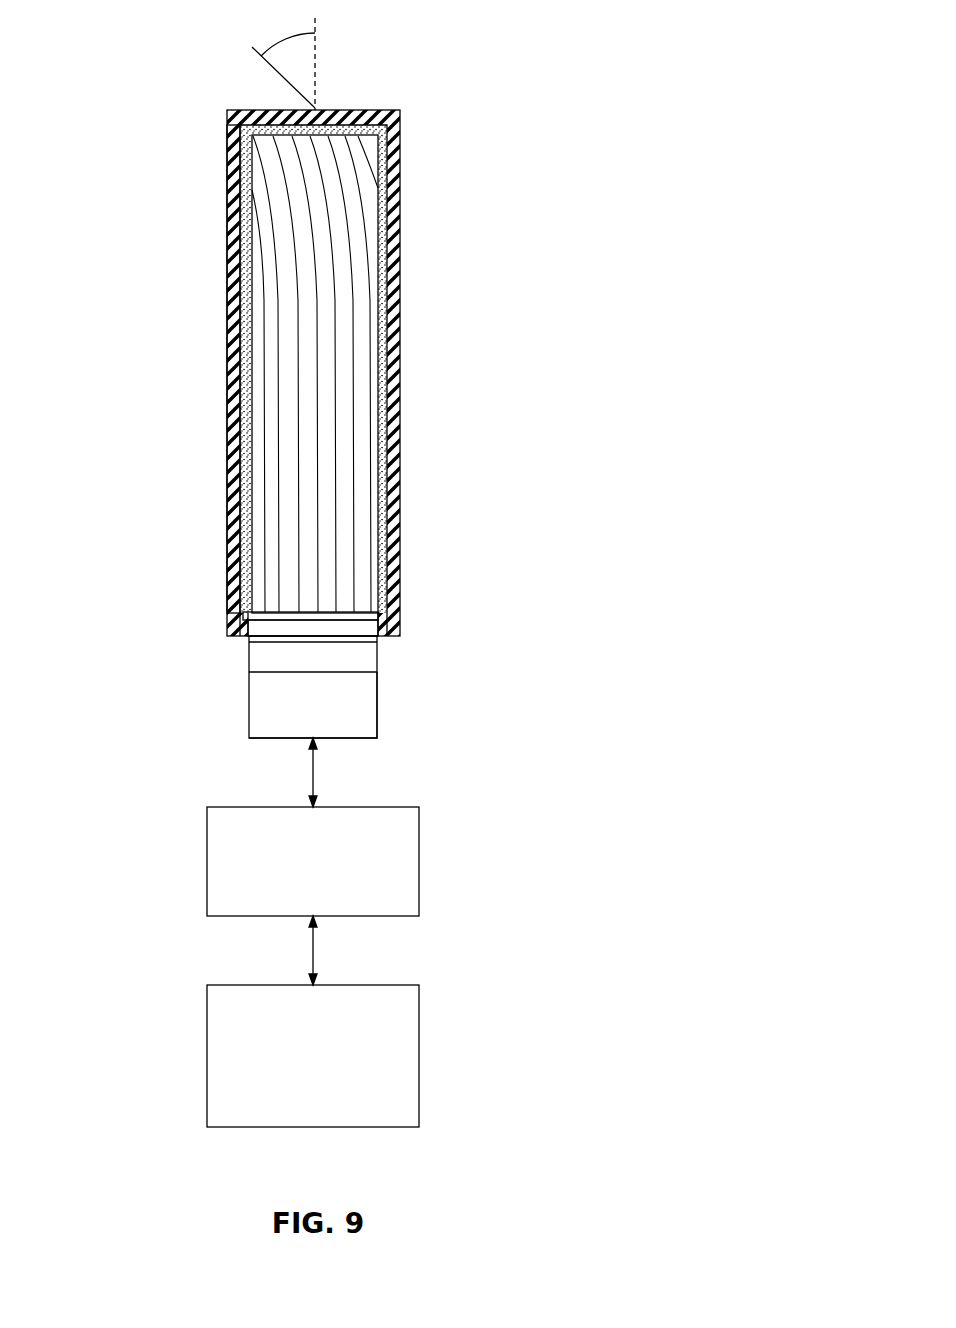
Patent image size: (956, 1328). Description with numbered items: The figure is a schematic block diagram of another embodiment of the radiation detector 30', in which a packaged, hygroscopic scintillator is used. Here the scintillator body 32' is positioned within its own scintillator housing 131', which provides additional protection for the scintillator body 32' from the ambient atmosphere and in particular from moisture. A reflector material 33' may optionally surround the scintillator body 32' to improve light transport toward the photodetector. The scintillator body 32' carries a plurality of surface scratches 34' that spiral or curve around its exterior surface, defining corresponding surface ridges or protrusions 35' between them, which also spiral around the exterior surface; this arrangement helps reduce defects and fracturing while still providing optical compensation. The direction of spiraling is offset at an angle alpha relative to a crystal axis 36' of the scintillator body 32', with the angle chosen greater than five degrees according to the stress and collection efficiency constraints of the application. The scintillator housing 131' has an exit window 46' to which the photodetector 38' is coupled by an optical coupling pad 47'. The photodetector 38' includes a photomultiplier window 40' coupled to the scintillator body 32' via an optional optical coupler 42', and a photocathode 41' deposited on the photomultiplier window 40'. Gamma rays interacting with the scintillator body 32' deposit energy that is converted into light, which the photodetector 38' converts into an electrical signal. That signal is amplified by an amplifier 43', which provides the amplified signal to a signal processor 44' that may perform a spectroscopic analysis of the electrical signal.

The radiation detector 30' is at (361, 380).
The scintillator body 32' is at (297, 373).
The scintillator housing 131' is at (147, 369).
The reflector material 33' is at (232, 369).
The surface scratches 34' is at (392, 374).
The surface ridges or protrusions 35' is at (430, 374).
The crystal axis 36' is at (366, 60).
The photodetector 38' is at (318, 687).
The photomultiplier window 40' is at (395, 648).
The photocathode 41' is at (395, 705).
The optical coupler 42' is at (235, 667).
The amplifier 43' is at (395, 861).
The signal processor 44' is at (395, 1055).
The exit window 46' is at (222, 614).
The optical coupling pad 47' is at (239, 587).